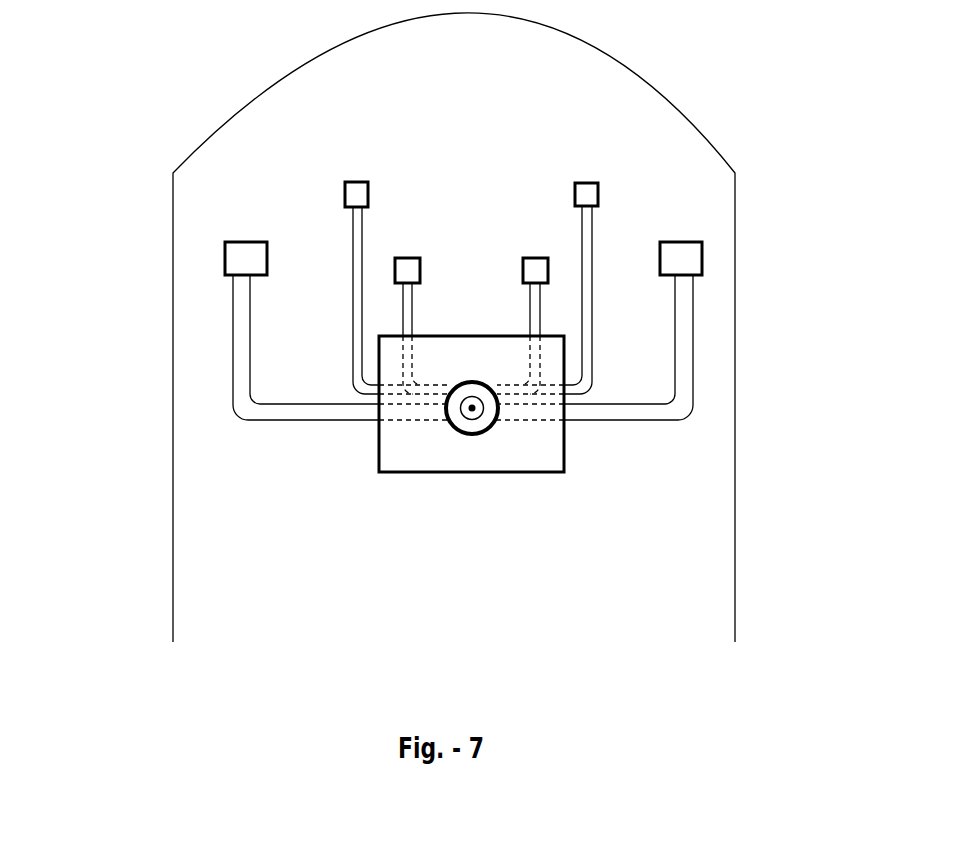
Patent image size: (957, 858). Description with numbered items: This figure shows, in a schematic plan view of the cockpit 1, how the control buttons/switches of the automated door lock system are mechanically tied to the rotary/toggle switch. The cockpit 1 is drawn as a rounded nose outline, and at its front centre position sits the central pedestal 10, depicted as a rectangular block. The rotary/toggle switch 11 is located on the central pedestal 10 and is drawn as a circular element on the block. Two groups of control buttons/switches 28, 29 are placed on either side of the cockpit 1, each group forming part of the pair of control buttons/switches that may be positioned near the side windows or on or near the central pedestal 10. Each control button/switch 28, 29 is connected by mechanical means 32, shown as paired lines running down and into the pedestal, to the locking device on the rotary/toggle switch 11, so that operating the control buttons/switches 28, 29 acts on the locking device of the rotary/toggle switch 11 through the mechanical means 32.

The cockpit 1 is at (454, 327).
The central pedestal 10 is at (480, 474).
The rotary/toggle switch 11 is at (472, 381).
The control button/switch 28 is at (252, 235).
The control button/switch 29 is at (690, 240).
The mechanical means 32 is at (400, 318).